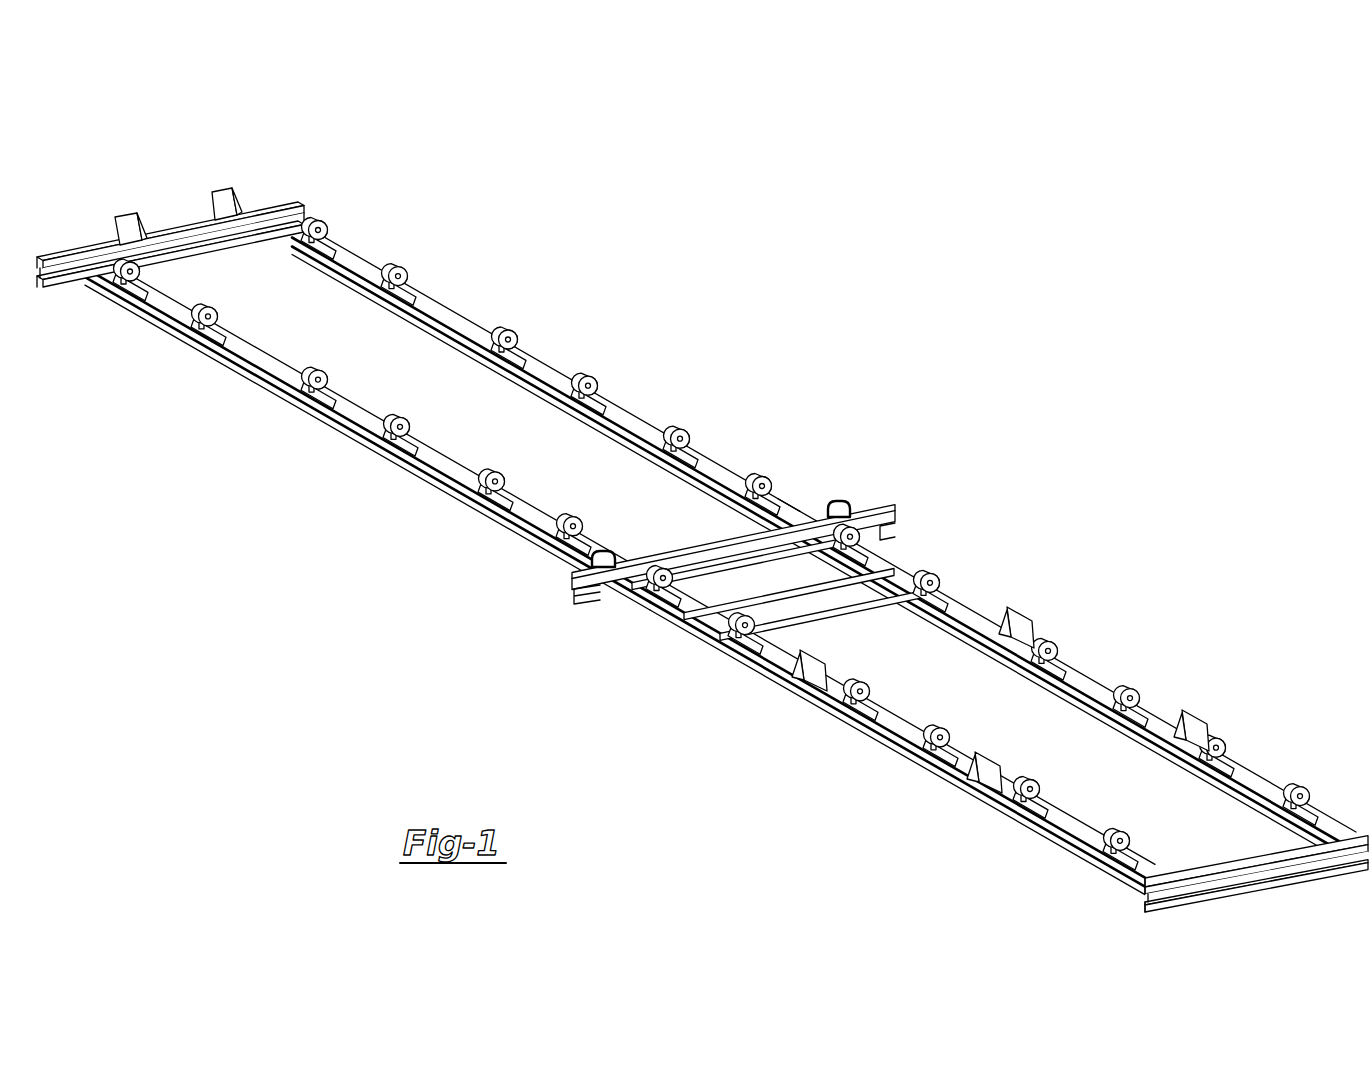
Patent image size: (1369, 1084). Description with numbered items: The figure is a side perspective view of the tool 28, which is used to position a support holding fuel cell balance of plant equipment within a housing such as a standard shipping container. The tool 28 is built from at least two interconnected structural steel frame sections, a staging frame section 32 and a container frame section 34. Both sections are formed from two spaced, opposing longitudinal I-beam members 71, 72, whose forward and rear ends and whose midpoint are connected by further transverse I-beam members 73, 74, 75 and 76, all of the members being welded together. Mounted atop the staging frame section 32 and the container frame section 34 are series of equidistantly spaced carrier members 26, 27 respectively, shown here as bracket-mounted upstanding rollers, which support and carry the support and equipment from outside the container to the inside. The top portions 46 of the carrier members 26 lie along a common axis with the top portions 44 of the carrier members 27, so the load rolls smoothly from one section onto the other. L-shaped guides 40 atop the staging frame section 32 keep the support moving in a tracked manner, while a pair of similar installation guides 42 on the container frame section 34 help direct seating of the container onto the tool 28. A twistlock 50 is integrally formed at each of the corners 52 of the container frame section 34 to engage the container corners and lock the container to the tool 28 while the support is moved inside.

The carrier members 26 is at (767, 627).
The carrier members 27 is at (407, 278).
The tool 28 is at (868, 356).
The staging frame section 32 is at (960, 794).
The container frame section 34 is at (253, 377).
The guides 40 is at (1034, 612).
The installation guides 42 is at (222, 192).
The top portions 44 is at (778, 480).
The top portions 46 is at (1152, 690).
The twistlock 50 is at (842, 508).
The corners 52 is at (850, 522).
The I-beam member 71 is at (410, 474).
The I-beam member 72 is at (558, 378).
The I-beam member 73 is at (277, 217).
The I-beam member 74 is at (1260, 853).
The I-beam member 75 is at (728, 546).
The I-beam member 76 is at (745, 592).